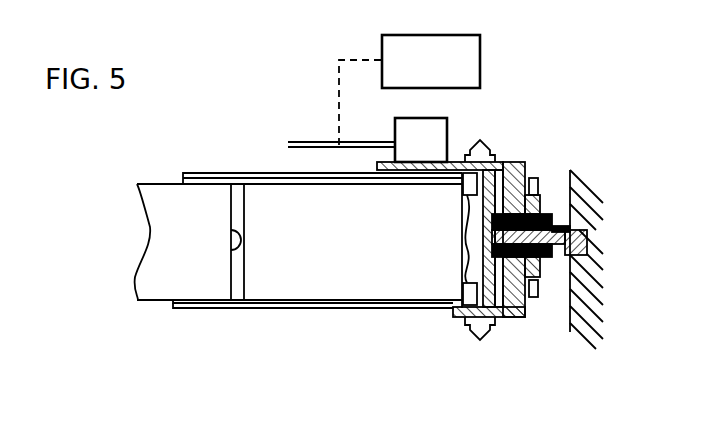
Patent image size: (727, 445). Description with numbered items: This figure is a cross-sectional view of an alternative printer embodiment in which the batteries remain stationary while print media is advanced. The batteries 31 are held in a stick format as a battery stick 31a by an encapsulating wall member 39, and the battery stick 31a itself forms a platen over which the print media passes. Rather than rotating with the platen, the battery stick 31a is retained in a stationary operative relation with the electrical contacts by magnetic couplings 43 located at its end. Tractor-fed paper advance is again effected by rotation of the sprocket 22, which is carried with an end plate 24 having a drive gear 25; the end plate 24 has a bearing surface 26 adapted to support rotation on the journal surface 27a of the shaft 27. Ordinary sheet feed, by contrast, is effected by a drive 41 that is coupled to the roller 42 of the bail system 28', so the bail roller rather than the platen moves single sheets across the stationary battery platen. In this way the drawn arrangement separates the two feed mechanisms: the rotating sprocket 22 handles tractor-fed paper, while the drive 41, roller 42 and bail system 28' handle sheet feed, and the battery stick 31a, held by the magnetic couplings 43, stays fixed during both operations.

The drive 41 is at (440, 35).
The bail system 28' is at (363, 102).
The roller 42 is at (409, 152).
The sprocket 22 is at (490, 155).
The end plate 24 is at (525, 164).
The drive gear 25 is at (548, 195).
The bearing surface 26 is at (538, 292).
The shaft 27 is at (588, 227).
The journal surface 27a is at (587, 254).
The magnetic coupling 43 is at (463, 190).
The encapsulating wall member 39 is at (333, 308).
The rod 31 is at (167, 253).
The battery stick 31a is at (258, 310).